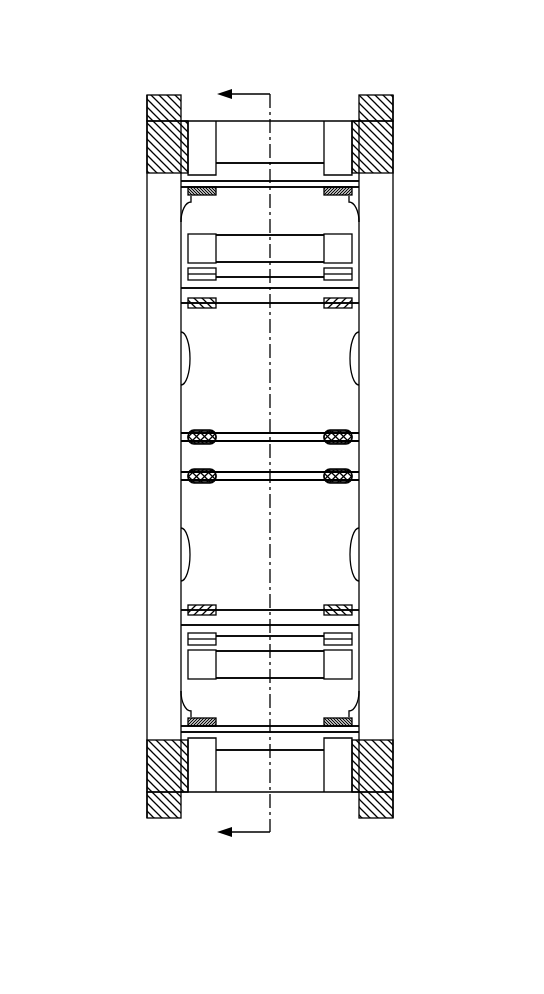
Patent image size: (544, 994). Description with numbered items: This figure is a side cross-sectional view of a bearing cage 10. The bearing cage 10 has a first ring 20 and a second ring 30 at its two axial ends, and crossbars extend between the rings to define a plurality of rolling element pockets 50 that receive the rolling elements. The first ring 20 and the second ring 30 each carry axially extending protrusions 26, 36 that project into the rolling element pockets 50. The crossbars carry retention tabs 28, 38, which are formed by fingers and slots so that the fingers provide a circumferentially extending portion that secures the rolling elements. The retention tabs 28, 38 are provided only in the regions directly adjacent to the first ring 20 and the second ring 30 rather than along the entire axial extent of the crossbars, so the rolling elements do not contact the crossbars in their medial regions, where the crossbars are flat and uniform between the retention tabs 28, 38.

The bearing cage 10 is at (303, 478).
The first ring 20 is at (162, 402).
The axially extending protrusions 26 is at (183, 138).
The axially extending protrusions 36 is at (365, 145).
The second ring 30 is at (380, 240).
The rolling element pockets 50 is at (335, 523).
The retention tabs 28 is at (197, 662).
The retention tabs 38 is at (335, 665).